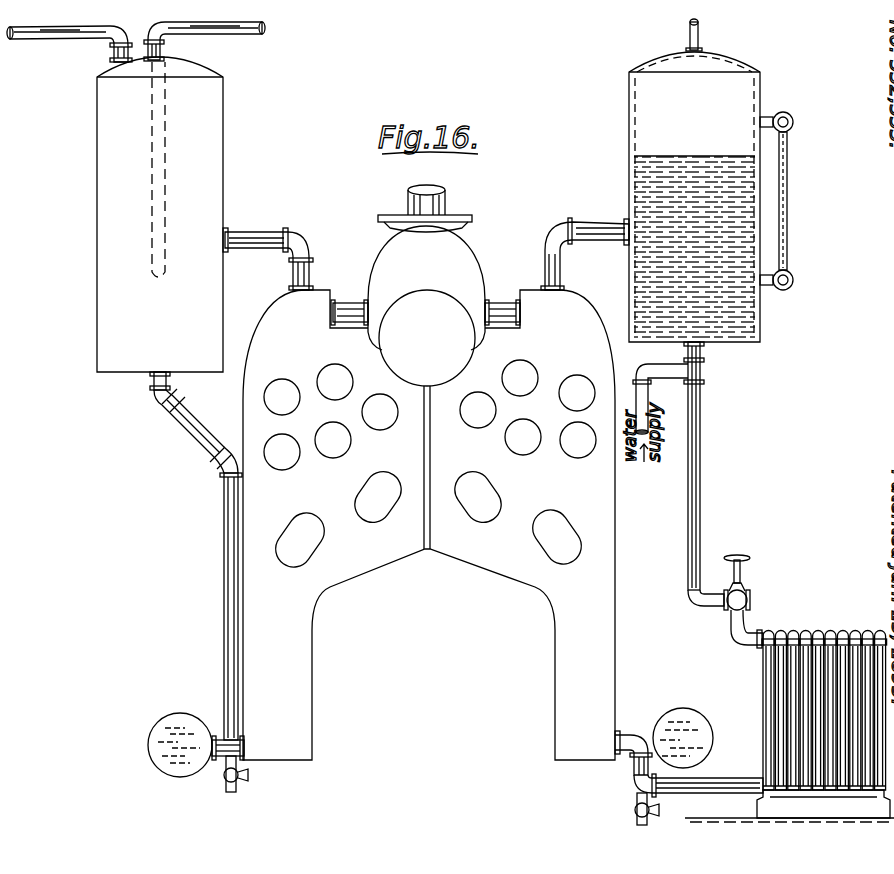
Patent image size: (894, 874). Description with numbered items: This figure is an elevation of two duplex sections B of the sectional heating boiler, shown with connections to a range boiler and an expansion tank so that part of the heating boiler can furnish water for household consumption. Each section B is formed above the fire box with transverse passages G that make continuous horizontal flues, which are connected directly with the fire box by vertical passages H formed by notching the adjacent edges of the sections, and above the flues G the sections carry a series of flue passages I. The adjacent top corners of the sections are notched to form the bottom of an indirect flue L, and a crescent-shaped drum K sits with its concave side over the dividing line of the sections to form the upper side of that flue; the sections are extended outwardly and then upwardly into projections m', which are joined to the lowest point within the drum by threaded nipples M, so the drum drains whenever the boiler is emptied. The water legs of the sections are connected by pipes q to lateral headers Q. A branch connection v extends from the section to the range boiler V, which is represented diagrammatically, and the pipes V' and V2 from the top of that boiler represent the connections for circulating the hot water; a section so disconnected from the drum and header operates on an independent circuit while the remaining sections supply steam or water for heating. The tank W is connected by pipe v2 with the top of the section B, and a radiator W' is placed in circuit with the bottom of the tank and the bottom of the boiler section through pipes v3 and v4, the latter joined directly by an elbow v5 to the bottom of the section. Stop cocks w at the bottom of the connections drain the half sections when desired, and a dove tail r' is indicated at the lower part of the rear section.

The range boiler V is at (160, 214).
The pipe V2 is at (69, 45).
The pipe V' is at (204, 42).
The branch connection v is at (268, 248).
The pipe v2 is at (585, 243).
The pipe v3 is at (698, 495).
The pipe v4 is at (698, 775).
The elbow v5 is at (640, 736).
The tank W is at (711, 180).
The radiator W' is at (789, 709).
The drum K is at (426, 267).
The indirect flue L is at (427, 338).
The threaded nipple M is at (345, 310).
The upward projection m' is at (429, 525).
The flue passage I is at (430, 415).
The duplex section B is at (428, 479).
The transverse passage G is at (429, 538).
The dove tail r' is at (196, 556).
The pipe q is at (225, 740).
The lateral header Q is at (152, 738).
The stop cock w is at (222, 784).
The vertical passage H is at (9, 471).